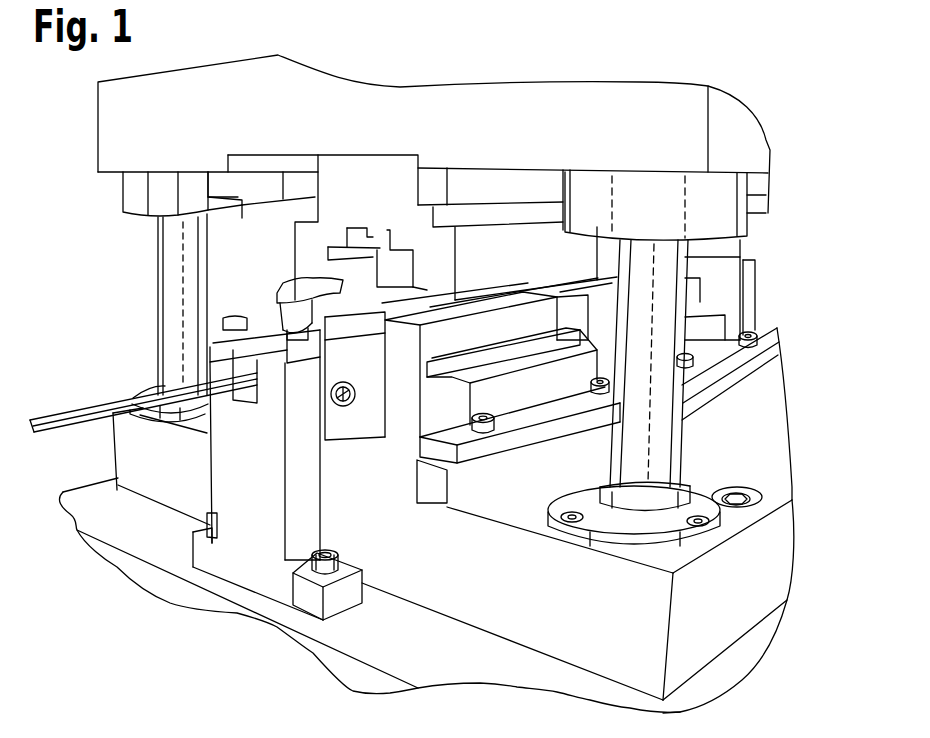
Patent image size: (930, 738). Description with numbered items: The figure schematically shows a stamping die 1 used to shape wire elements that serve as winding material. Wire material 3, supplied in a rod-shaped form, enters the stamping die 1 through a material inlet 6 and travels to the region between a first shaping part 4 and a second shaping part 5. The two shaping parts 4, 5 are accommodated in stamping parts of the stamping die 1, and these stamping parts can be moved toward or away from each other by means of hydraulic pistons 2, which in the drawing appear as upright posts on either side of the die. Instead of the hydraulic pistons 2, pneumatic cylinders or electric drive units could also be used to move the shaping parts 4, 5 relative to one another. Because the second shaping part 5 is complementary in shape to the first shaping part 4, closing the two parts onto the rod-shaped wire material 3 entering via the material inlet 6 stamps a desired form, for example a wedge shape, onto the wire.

The stamping die 1 is at (777, 290).
The hydraulic pistons 2 is at (174, 323).
The wire material 3 is at (62, 413).
The first shaping part 4 is at (425, 250).
The second shaping part 5 is at (410, 414).
The material inlet 6 is at (233, 398).